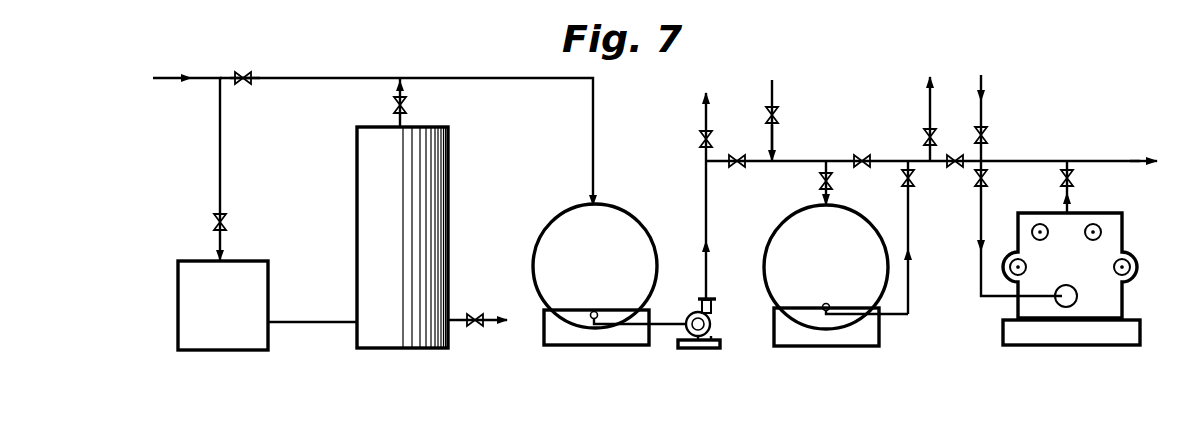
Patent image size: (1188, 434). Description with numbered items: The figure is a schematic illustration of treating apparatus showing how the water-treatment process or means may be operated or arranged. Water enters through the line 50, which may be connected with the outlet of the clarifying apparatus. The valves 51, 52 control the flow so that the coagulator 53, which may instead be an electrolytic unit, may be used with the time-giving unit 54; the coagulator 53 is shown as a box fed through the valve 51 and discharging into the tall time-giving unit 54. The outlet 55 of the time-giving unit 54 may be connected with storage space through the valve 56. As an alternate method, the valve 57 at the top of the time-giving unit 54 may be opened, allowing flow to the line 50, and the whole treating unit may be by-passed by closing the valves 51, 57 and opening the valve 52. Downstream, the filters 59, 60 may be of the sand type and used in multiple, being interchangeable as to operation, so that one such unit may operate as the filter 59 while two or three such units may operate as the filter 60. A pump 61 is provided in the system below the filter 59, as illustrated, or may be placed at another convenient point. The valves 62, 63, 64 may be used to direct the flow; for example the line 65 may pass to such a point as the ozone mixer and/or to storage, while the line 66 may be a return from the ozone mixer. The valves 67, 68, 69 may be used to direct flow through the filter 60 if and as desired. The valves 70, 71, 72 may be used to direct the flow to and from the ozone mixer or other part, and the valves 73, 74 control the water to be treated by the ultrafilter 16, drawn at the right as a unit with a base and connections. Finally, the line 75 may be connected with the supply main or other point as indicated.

The ultrafilter 16 is at (1110, 246).
The line 50 is at (170, 74).
The valve 51 is at (216, 226).
The valve 52 is at (247, 74).
The coagulator 53 is at (176, 308).
The time-giving unit 54 is at (357, 233).
The outlet 55 is at (456, 313).
The valve 56 is at (489, 313).
The valve 57 is at (406, 108).
The filter 59 is at (644, 229).
The filter 60 is at (769, 235).
The pump 61 is at (693, 312).
The valve 62 is at (697, 141).
The valve 63 is at (731, 166).
The valve 64 is at (779, 117).
The line 65 is at (700, 104).
The line 66 is at (776, 145).
The valve 67 is at (832, 182).
The valve 68 is at (878, 151).
The valve 69 is at (899, 177).
The valve 70 is at (952, 164).
The valve 71 is at (925, 138).
The valve 72 is at (989, 136).
The valve 73 is at (989, 179).
The valve 74 is at (1078, 179).
The line 75 is at (1124, 149).